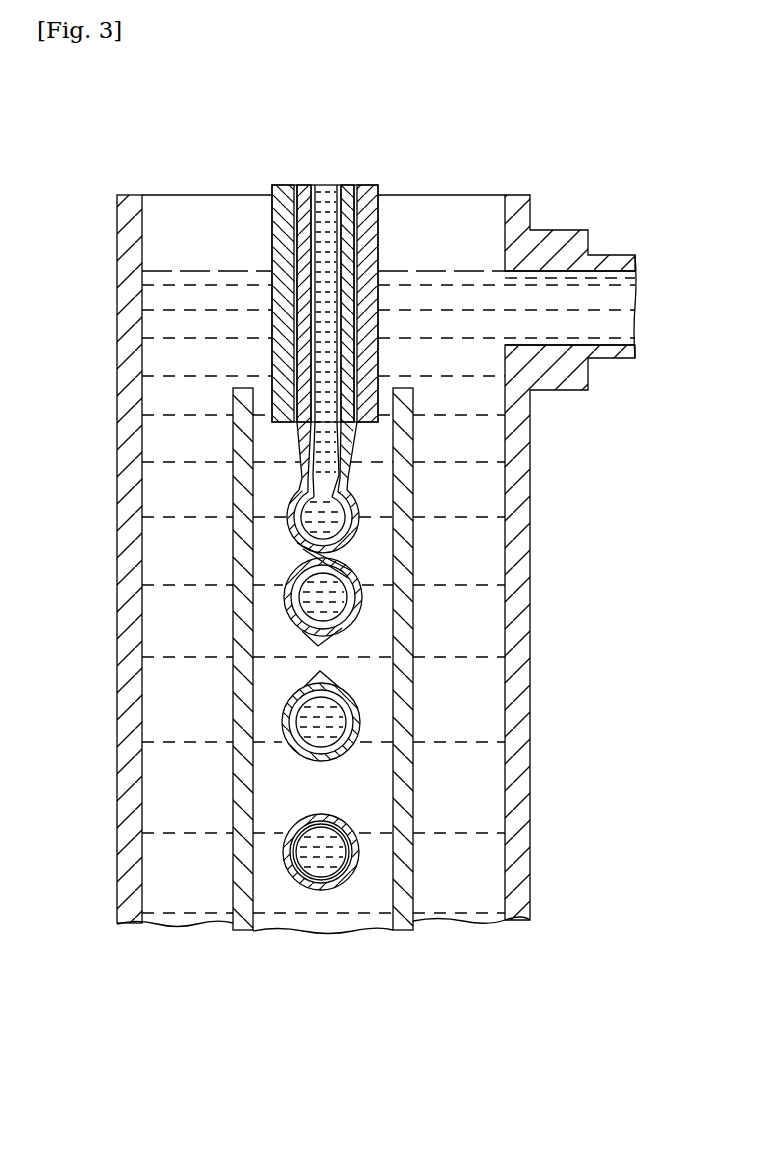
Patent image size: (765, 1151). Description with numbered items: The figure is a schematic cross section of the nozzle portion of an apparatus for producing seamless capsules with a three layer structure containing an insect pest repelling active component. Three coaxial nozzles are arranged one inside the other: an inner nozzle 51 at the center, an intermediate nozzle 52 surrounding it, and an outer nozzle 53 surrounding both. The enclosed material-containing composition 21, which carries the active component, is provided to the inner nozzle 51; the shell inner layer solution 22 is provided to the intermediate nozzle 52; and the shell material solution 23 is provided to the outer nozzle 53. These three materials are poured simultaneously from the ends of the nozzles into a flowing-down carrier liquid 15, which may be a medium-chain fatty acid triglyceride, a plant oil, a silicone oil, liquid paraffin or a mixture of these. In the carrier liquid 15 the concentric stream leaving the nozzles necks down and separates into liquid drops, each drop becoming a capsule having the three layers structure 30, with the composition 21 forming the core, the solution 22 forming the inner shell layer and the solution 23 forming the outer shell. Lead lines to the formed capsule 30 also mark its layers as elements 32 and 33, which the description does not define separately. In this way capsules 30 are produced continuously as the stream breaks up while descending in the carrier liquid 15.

The carrier liquid 15 is at (480, 443).
The enclosed material-containing composition 21 is at (327, 186).
The shell inner layer solution 22 is at (348, 186).
The shell material solution 23 is at (363, 186).
The capsule having three layers structure 30 is at (456, 888).
The inner shell 32 is at (360, 838).
The outer shell 33 is at (360, 858).
The inner nozzle 51 is at (313, 186).
The intermediate nozzle 52 is at (293, 186).
The outer nozzle 53 is at (273, 186).